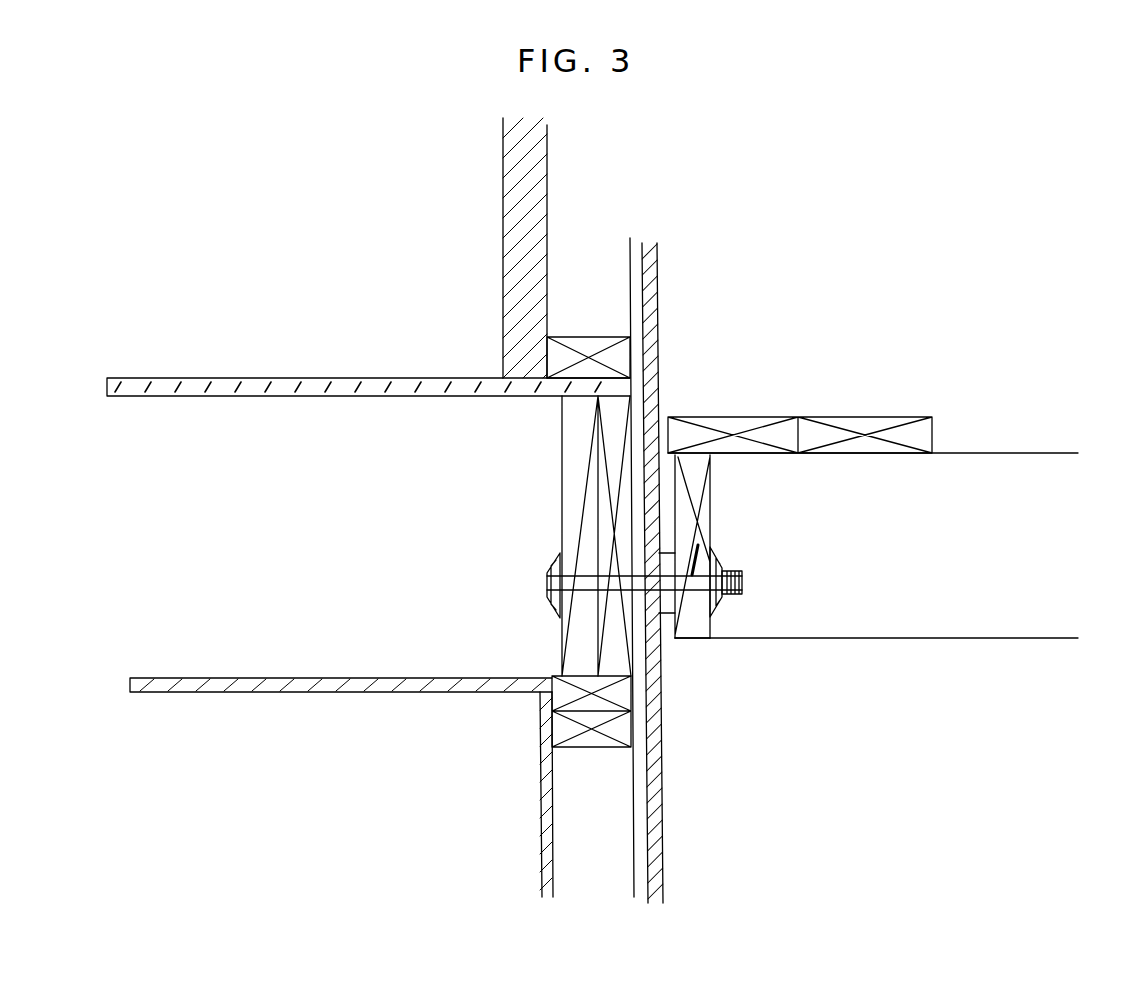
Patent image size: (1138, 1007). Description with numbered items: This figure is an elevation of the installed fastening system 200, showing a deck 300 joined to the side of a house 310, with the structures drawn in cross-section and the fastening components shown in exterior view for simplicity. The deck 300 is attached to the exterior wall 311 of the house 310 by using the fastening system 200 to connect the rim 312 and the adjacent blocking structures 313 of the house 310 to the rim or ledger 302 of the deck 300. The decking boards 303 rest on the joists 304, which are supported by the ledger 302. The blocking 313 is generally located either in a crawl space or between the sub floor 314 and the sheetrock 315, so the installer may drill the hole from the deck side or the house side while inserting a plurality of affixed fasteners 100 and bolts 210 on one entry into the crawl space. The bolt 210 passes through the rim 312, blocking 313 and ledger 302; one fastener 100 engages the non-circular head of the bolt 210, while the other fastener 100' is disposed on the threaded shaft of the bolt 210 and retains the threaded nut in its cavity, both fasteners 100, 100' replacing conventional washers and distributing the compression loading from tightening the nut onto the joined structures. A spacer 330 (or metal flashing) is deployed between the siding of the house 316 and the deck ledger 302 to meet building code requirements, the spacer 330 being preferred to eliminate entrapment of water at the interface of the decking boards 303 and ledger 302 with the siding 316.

The house 310 is at (357, 152).
The exterior wall 311 is at (625, 206).
The rim 312 is at (607, 637).
The blocking structures 313 is at (560, 452).
The sub floor 314 is at (333, 373).
The sheetrock 315 is at (537, 252).
The siding of the house 316 is at (659, 307).
The deck 300 is at (872, 374).
The ledger 302 is at (710, 503).
The decking boards 303 is at (968, 413).
The joists 304 is at (982, 499).
The spacer 330 is at (668, 625).
The fastening system 200 is at (548, 553).
The bolt 210 is at (588, 590).
The fastener 100 is at (503, 585).
The fastener 100' is at (750, 582).